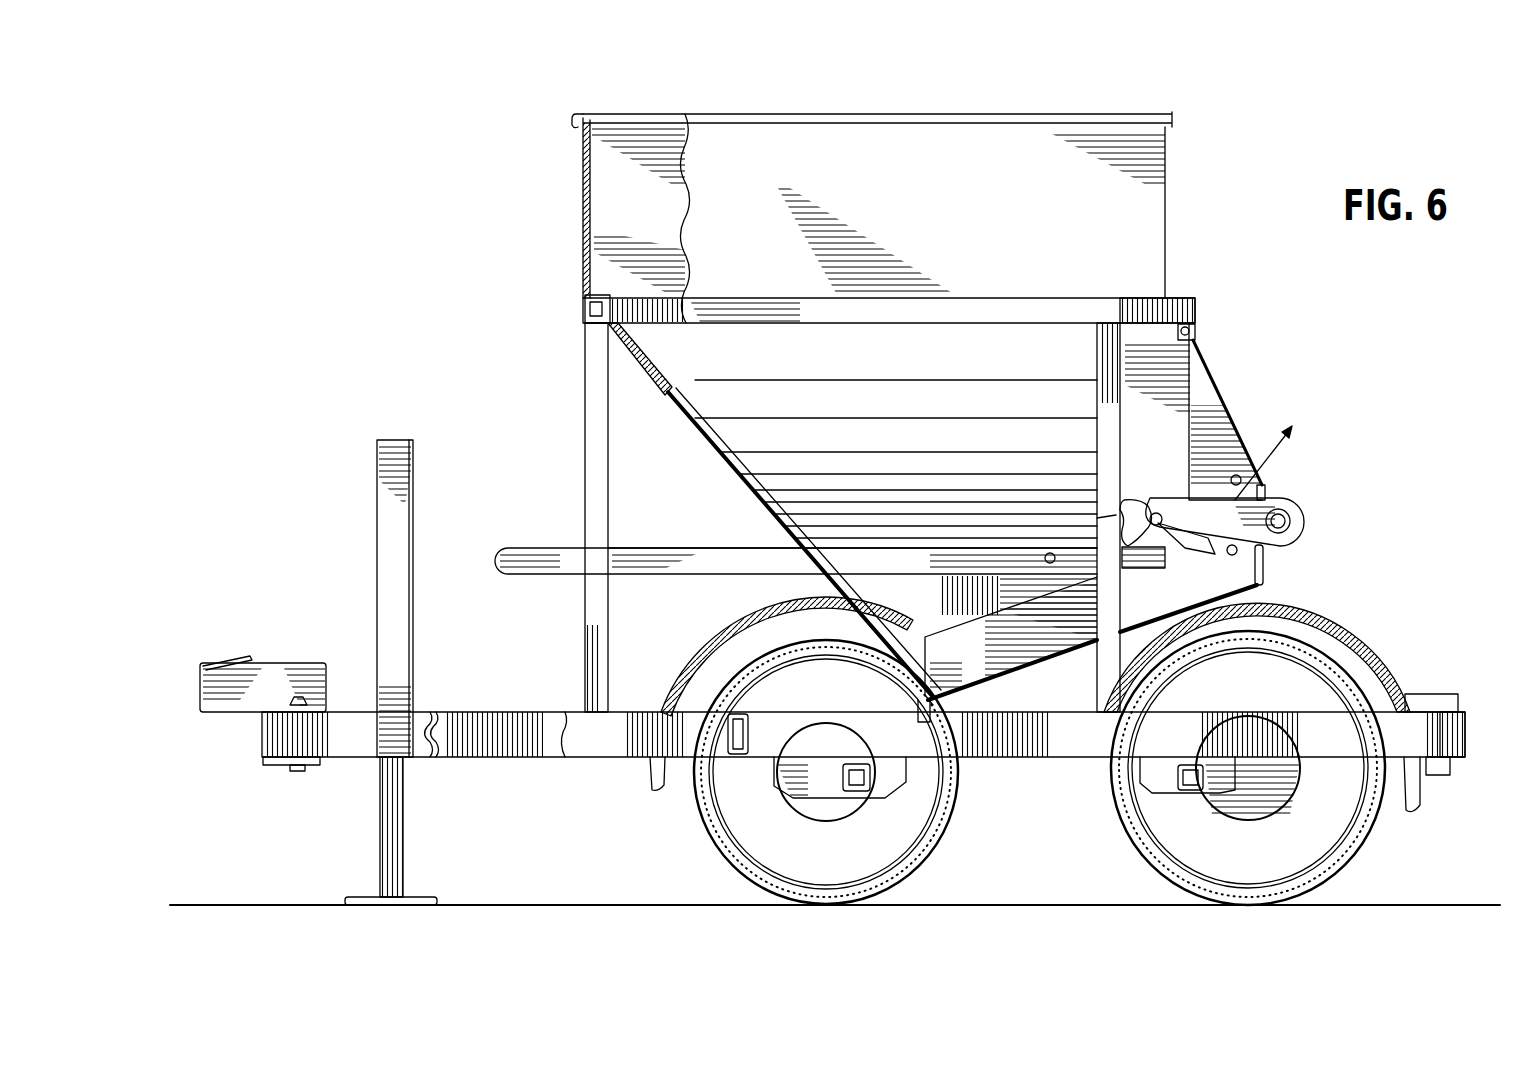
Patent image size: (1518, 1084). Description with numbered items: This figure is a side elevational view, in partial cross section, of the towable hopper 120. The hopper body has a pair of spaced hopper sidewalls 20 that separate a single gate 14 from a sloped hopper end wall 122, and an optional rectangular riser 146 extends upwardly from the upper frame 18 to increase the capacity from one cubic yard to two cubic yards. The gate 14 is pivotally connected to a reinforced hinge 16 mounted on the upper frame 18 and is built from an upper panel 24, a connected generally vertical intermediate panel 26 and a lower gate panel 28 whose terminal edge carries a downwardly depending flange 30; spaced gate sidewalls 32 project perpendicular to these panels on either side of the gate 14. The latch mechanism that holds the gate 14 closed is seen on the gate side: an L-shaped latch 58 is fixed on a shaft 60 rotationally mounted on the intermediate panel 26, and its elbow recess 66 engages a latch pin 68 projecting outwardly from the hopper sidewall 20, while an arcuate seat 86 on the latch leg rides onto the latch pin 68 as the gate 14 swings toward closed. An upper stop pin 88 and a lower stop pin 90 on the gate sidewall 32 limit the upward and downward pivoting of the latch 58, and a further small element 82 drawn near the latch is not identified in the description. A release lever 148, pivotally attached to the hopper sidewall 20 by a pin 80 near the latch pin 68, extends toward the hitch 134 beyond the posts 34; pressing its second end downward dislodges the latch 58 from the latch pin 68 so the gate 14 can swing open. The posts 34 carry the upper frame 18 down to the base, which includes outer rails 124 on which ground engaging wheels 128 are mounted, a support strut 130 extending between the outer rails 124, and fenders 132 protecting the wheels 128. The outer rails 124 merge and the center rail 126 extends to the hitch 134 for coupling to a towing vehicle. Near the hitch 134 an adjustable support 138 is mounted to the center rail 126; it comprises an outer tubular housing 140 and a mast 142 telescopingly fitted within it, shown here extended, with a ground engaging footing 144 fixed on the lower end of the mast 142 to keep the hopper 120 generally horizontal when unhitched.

The gate 14 is at (1233, 412).
The reinforced hinge 16 is at (1197, 331).
The upper frame 18 is at (962, 303).
The hopper sidewall 20 is at (888, 379).
The upper panel 24 is at (1218, 382).
The intermediate panel 26 is at (1265, 487).
The lower gate panel 28 is at (1028, 655).
The flange 30 is at (935, 714).
The gate sidewall 32 is at (1250, 593).
The posts 34 is at (585, 440).
The latch 58 is at (1300, 514).
The shaft 60 is at (1290, 526).
The elbow recess 66 is at (1158, 512).
The latch pin 68 is at (1165, 530).
The pin 80 is at (1050, 565).
The bracket 82 is at (1132, 570).
The arcuate seat 86 is at (1130, 505).
The upper stop pin 88 is at (1258, 485).
The lower stop pin 90 is at (1240, 552).
The hopper 120 is at (1236, 180).
The hopper end wall 122 is at (648, 370).
The outer rails 124 is at (498, 750).
The center rail 126 is at (352, 750).
The wheels 128 is at (722, 850).
The support strut 130 is at (856, 765).
The fenders 132 is at (1365, 640).
The hitch 134 is at (268, 665).
The adjustable support 138 is at (377, 490).
The outer tubular housing 140 is at (388, 562).
The mast 142 is at (385, 835).
The ground engaging footing 144 is at (422, 897).
The riser 146 is at (583, 204).
The release lever 148 is at (728, 548).